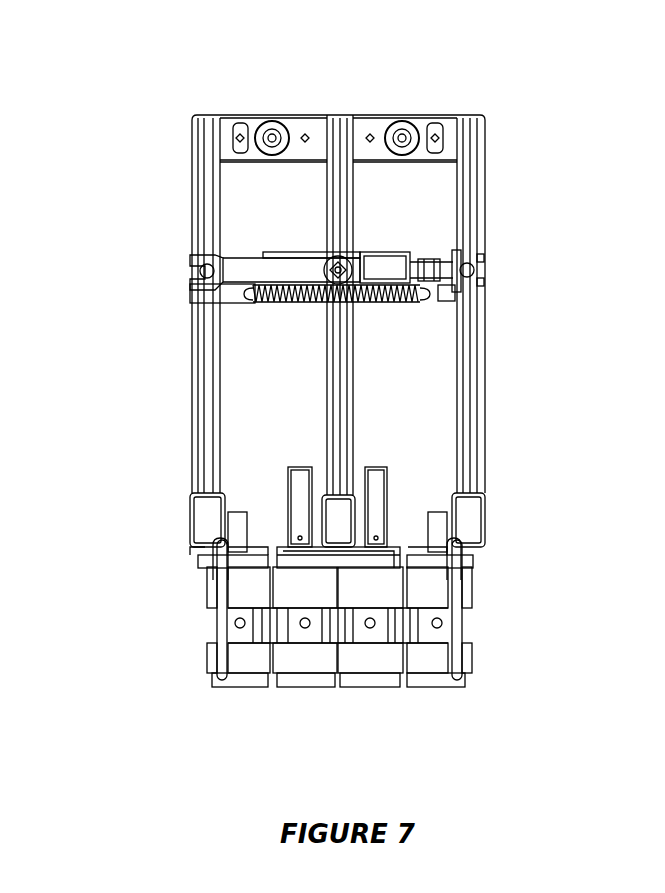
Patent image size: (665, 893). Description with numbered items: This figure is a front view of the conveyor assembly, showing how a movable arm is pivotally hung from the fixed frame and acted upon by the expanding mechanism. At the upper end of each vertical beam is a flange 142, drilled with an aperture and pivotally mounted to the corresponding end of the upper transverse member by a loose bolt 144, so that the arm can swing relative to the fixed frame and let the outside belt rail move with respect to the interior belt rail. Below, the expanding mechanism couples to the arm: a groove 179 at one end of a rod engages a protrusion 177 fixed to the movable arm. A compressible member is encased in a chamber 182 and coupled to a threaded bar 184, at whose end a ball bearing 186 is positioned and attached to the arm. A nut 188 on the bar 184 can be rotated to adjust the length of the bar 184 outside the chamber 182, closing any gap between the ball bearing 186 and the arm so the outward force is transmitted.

The flange 142 is at (228, 115).
The loose bolt 144 is at (278, 115).
The protrusion 177 is at (192, 275).
The groove 179 is at (195, 263).
The chamber 182 is at (377, 252).
The bar 184 is at (428, 257).
The ball bearing 186 is at (480, 244).
The nut 188 is at (413, 252).